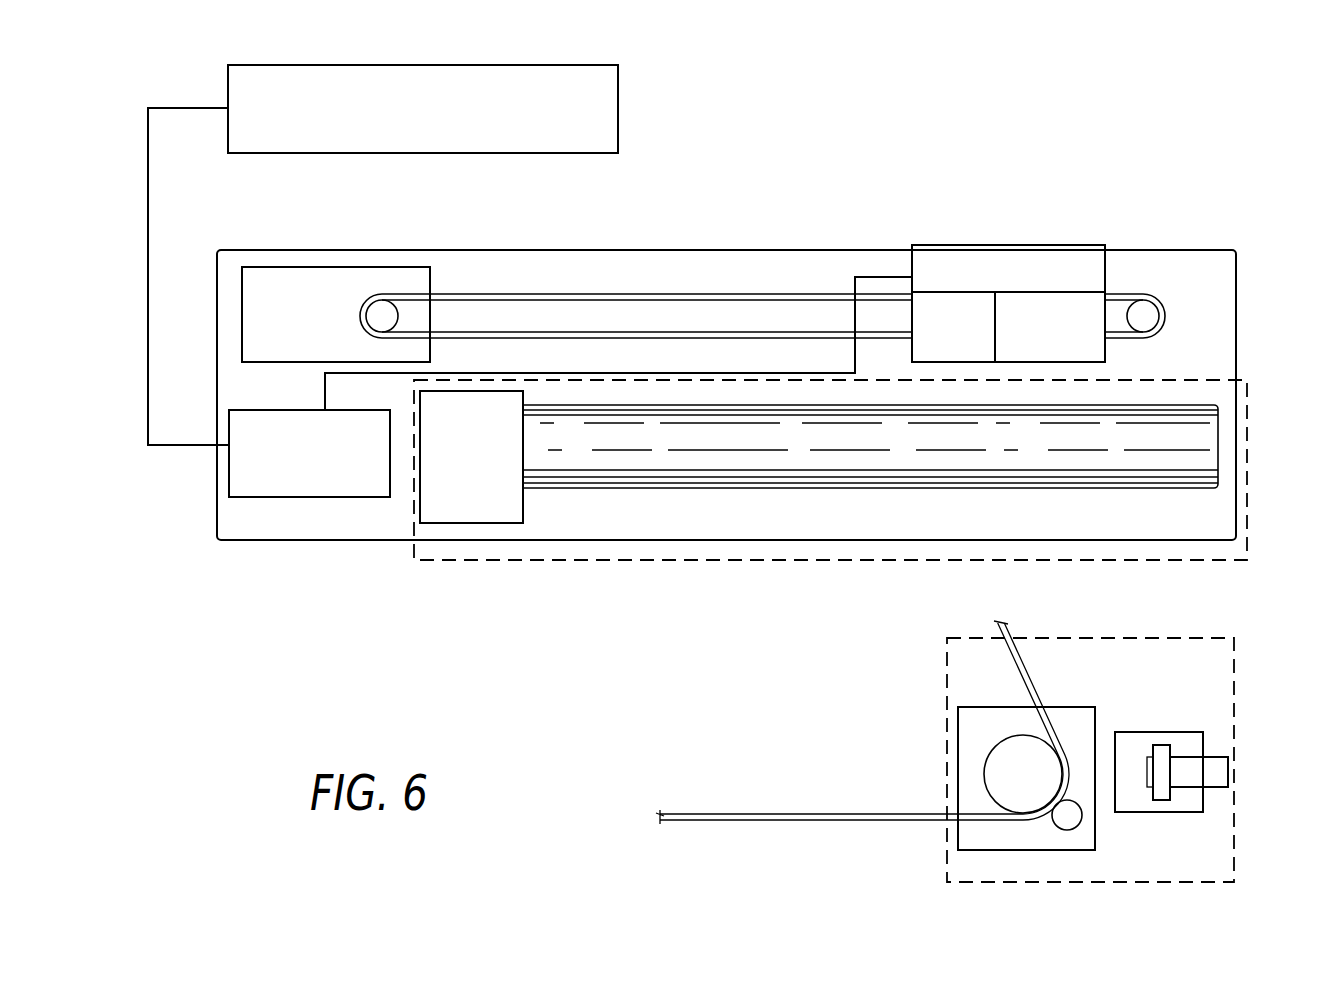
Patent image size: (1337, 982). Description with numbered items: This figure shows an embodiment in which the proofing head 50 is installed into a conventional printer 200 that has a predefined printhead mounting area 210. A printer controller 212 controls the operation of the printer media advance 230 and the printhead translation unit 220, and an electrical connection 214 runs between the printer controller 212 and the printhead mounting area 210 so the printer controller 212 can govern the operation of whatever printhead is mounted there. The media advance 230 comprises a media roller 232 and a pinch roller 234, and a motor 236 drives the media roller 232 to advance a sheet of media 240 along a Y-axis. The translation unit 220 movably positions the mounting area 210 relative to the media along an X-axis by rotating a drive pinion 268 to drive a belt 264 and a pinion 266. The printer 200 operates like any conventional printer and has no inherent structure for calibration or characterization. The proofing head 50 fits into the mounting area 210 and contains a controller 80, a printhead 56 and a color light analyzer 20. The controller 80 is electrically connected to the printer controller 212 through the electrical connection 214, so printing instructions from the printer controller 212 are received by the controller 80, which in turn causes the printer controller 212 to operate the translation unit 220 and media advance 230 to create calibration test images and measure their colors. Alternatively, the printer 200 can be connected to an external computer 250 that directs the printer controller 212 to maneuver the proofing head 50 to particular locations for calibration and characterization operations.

The color light analyzer 20 is at (1067, 303).
The proofing head 50 is at (962, 200).
The printhead 56 is at (955, 303).
The controller 80 is at (1038, 260).
The conventional printer 200 is at (270, 556).
The printhead mounting area 210 is at (912, 263).
The printer controller 212 is at (227, 475).
The electrical connection 214 is at (568, 372).
The printhead translation unit 220 is at (250, 308).
The printer media advance 230 is at (555, 562).
The media roller 232 is at (790, 477).
The pinch roller 234 is at (1073, 808).
The motor 236 is at (430, 498).
The sheet of media 240 is at (797, 820).
The external computer 250 is at (622, 106).
The belt 264 is at (1163, 318).
The pinion 266 is at (1152, 310).
The drive pinion 268 is at (380, 306).